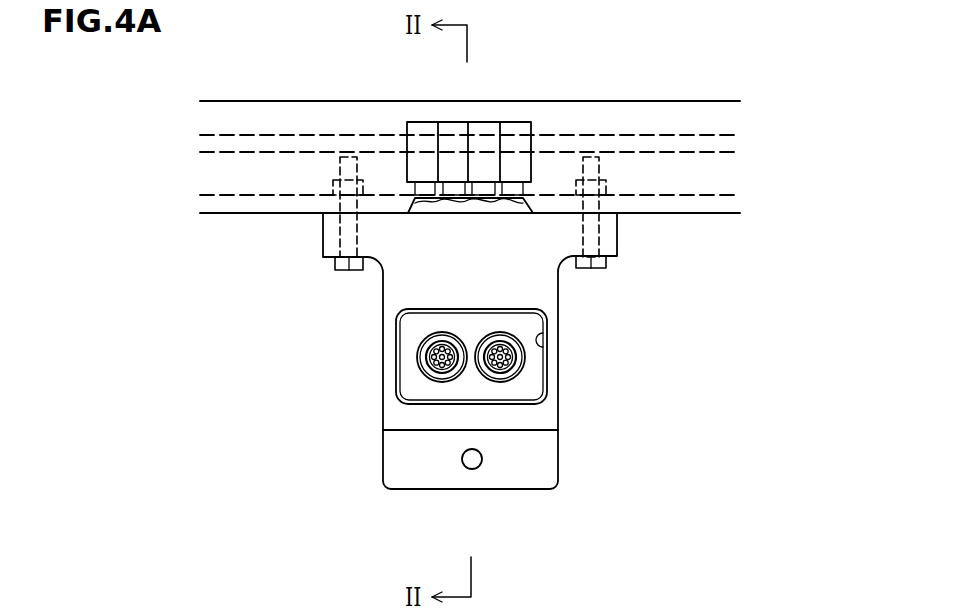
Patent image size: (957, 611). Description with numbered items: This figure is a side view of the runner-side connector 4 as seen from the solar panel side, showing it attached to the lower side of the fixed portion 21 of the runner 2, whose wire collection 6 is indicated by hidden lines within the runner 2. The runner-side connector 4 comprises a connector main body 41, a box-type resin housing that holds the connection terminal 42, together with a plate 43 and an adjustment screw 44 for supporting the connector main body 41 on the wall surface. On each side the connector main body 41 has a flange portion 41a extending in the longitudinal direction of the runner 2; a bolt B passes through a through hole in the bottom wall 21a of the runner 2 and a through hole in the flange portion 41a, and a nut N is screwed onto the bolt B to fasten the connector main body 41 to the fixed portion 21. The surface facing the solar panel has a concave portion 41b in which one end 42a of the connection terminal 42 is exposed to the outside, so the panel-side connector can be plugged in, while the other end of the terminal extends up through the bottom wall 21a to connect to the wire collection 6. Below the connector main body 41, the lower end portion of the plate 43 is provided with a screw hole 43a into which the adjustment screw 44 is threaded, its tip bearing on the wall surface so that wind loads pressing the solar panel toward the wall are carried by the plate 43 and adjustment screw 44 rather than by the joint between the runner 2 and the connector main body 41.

The runner 2 is at (566, 100).
The wire collection 6 is at (236, 136).
The fixed portion 21 is at (470, 251).
The bottom wall 21a is at (231, 215).
The nut N is at (338, 152).
The bolt B is at (350, 272).
The runner-side connector 4 is at (477, 380).
The connector main body 41 is at (477, 380).
The flange portion 41a is at (333, 237).
The concave portion 41b is at (539, 348).
The connection terminal 42 is at (414, 360).
The one end of connection terminal 42a is at (427, 357).
The plate 43 is at (545, 457).
The screw hole 43a is at (472, 470).
The adjustment screw 44 is at (488, 498).